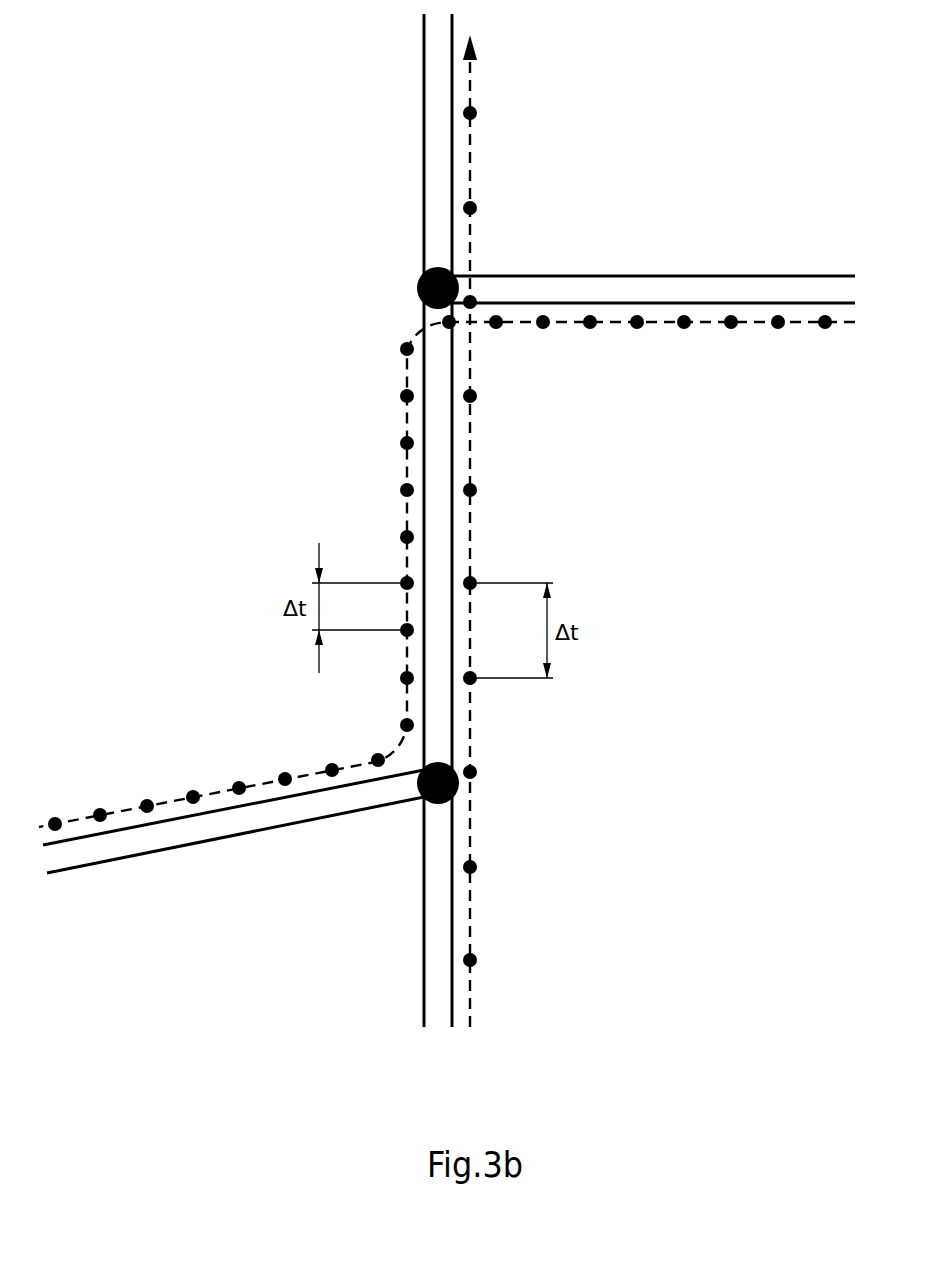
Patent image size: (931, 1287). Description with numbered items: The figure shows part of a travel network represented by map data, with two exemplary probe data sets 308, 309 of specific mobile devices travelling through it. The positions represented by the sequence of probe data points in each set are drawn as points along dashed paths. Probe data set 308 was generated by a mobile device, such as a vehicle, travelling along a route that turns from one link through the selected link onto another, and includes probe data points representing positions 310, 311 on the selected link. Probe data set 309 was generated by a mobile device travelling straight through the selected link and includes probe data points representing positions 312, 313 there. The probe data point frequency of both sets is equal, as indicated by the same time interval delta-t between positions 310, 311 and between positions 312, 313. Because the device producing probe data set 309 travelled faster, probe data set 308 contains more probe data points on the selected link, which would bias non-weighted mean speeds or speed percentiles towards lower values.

The probe data set 308 is at (407, 413).
The probe data set 309 is at (470, 428).
The position 310 is at (400, 632).
The position 311 is at (400, 583).
The position 312 is at (477, 681).
The position 313 is at (477, 581).